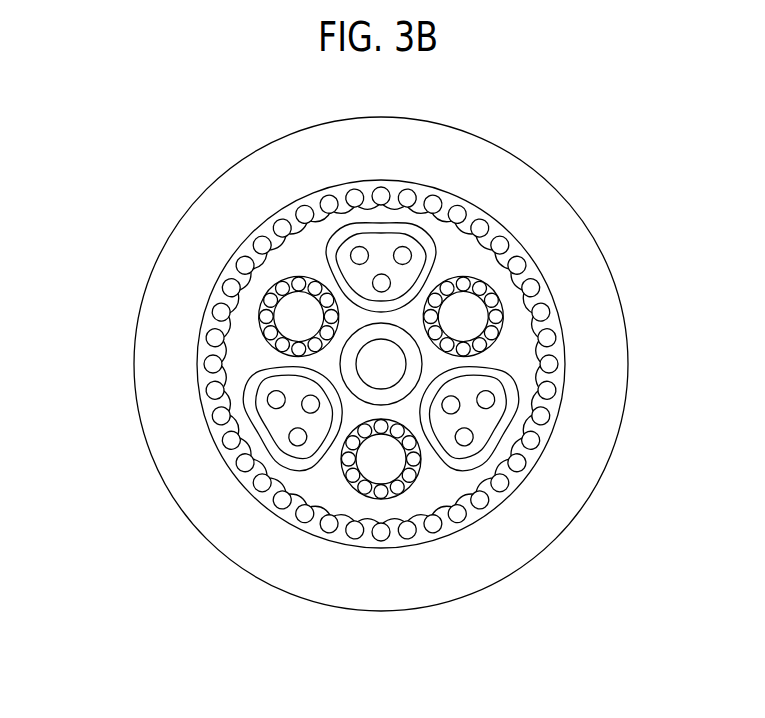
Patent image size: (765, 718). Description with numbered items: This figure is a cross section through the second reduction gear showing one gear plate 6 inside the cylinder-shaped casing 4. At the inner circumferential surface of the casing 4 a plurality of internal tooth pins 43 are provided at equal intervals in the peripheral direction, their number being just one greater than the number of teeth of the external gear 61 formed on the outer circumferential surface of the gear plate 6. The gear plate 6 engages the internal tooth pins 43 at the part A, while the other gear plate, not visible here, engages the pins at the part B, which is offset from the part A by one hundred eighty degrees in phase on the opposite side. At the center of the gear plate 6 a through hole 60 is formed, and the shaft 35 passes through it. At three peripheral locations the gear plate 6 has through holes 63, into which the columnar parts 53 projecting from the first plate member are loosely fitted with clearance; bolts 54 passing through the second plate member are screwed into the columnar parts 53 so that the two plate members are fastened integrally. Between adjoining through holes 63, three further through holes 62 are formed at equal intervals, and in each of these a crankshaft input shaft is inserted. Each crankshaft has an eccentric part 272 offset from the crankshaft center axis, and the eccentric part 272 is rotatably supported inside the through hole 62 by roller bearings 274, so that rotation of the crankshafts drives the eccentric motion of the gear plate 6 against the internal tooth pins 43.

The casing 4 is at (630, 349).
The gear plate 6 is at (530, 257).
The internal tooth pins 43 is at (548, 313).
The external gear 61 is at (494, 283).
The eccentric part 272 is at (370, 391).
The roller bearings 274 is at (270, 303).
The through hole 62 is at (255, 332).
The through hole 60 is at (466, 506).
The shaft 35 is at (400, 387).
The columnar parts 53 is at (360, 374).
The bolts 54 is at (290, 440).
The through hole 63 is at (283, 456).
The part A is at (424, 560).
The part B is at (432, 170).